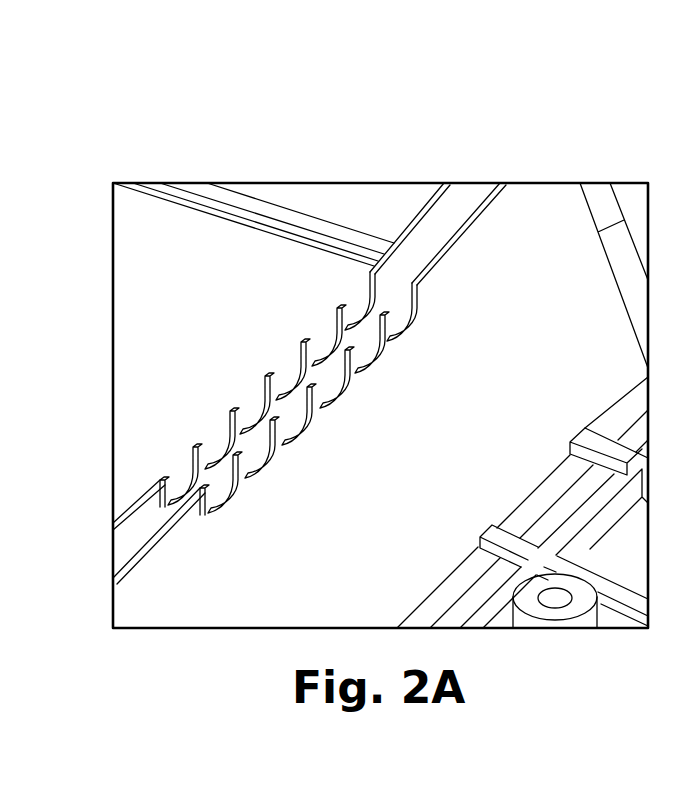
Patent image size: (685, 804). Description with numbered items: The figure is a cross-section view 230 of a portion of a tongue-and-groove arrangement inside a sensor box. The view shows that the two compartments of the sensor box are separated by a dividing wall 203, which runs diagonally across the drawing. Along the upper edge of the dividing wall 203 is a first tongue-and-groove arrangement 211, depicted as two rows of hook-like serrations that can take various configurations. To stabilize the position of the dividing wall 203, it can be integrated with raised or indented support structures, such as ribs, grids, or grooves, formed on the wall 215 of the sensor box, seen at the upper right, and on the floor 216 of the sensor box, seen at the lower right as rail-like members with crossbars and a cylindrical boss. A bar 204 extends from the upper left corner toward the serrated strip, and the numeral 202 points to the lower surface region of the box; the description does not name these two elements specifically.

The cross-section view 230 is at (174, 160).
The support bar 204 is at (192, 289).
The first tongue-and-groove arrangement 211 is at (275, 363).
The wall 215 is at (598, 232).
The dividing wall 203 is at (420, 470).
The floor 216 is at (572, 512).
The lower surface 202 is at (270, 578).